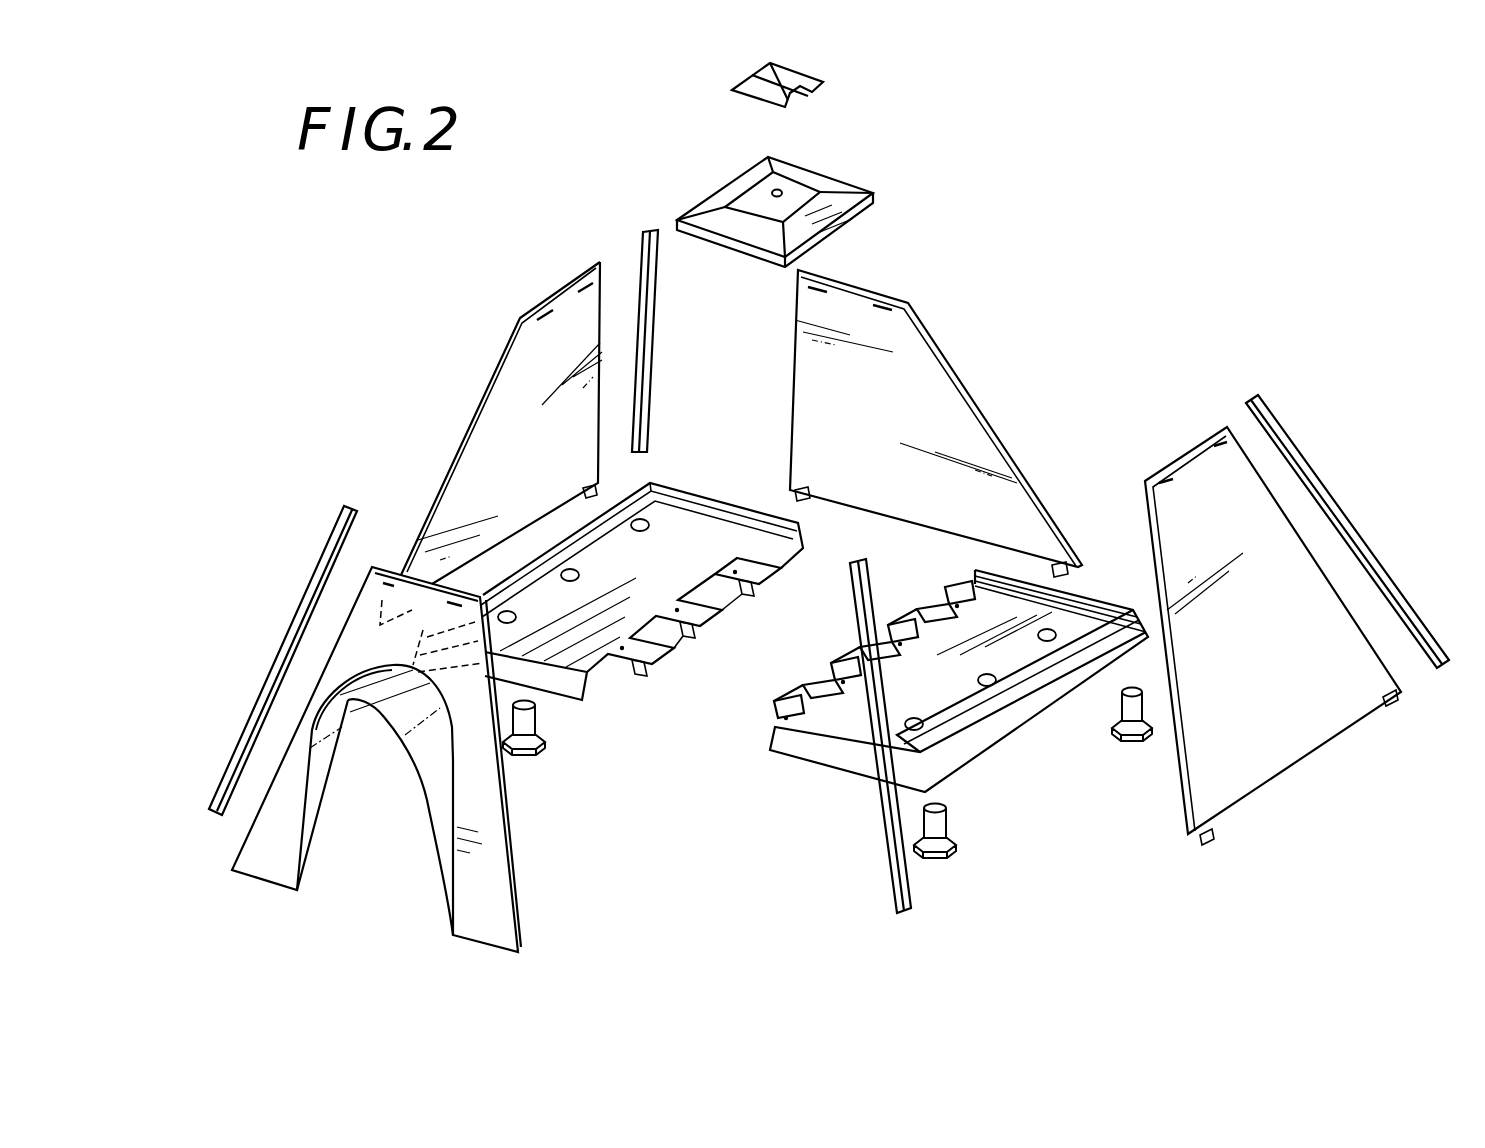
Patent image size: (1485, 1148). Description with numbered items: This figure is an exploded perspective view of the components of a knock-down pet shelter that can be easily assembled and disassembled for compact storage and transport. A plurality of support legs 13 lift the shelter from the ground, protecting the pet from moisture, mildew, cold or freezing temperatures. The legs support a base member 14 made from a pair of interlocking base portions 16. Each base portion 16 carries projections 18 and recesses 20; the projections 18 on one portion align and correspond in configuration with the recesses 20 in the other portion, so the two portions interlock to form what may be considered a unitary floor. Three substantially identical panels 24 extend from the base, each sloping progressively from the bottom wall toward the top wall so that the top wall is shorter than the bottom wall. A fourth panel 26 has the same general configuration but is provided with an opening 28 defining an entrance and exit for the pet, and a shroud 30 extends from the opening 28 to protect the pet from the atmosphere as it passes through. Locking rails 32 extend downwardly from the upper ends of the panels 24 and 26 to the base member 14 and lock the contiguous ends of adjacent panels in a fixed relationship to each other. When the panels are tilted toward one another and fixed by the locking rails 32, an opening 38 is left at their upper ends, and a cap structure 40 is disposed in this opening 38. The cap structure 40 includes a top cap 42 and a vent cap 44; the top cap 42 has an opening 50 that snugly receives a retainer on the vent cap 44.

The support legs 13 is at (540, 718).
The base member 14 is at (618, 699).
The interlocking base portions 16 is at (857, 760).
The projections 18 is at (737, 593).
The recesses 20 is at (840, 680).
The panels 24 is at (522, 356).
The fourth panel 26 is at (488, 896).
The opening 28 is at (333, 766).
The shroud 30 is at (438, 825).
The locking rails 32 is at (639, 259).
The opening 38 is at (742, 379).
The cap structure 40 is at (868, 193).
The top cap 42 is at (855, 209).
The vent cap 44 is at (818, 90).
The opening 50 is at (771, 189).